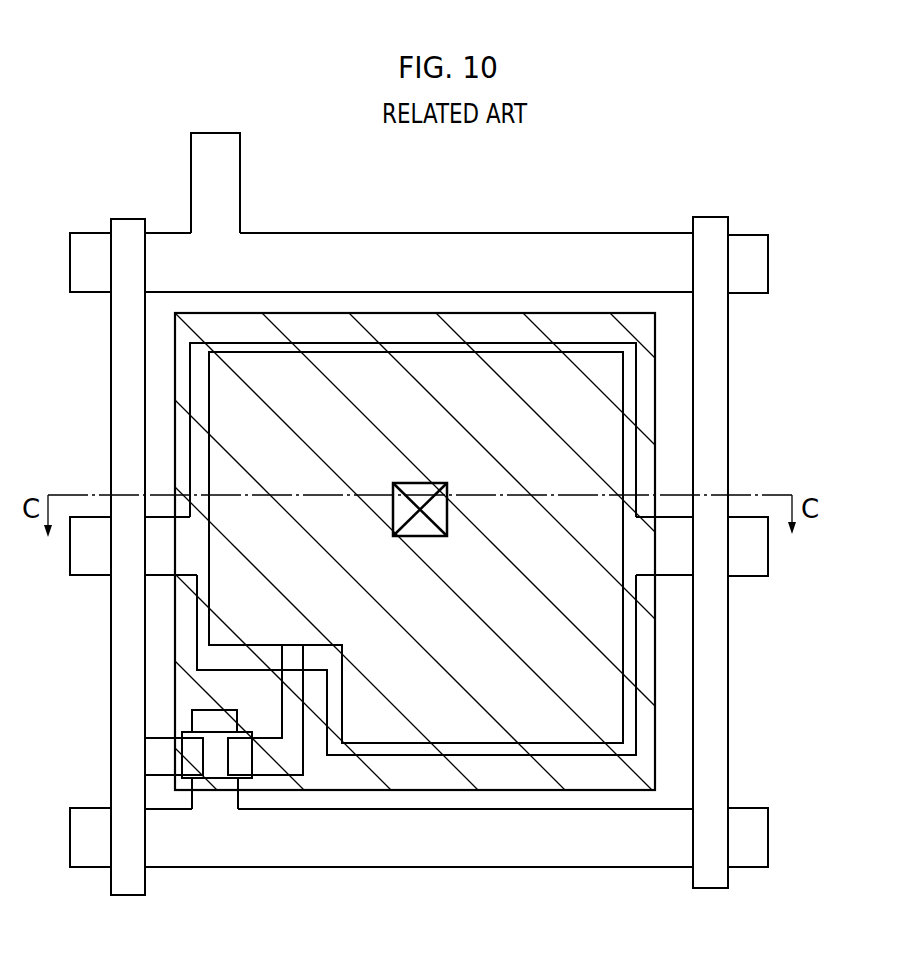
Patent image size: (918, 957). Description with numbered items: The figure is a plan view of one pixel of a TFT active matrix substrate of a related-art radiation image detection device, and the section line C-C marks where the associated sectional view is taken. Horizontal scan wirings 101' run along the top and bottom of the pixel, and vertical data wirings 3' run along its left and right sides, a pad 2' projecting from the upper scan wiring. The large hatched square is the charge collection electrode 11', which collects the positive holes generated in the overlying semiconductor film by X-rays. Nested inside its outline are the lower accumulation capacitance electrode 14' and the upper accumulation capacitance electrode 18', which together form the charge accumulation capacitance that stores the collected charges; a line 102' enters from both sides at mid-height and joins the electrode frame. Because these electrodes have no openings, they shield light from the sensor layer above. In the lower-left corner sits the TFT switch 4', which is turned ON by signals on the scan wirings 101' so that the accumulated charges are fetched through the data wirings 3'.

The data pad 2' is at (246, 183).
The data wiring 3' is at (419, 520).
The TFT switch 4' is at (186, 727).
The charge collection electrode 11' is at (415, 484).
The lower accumulation capacitance electrode 14' is at (413, 466).
The upper accumulation capacitance electrode 18' is at (416, 460).
The scan wiring 101' is at (462, 550).
The storage line 102' is at (462, 546).